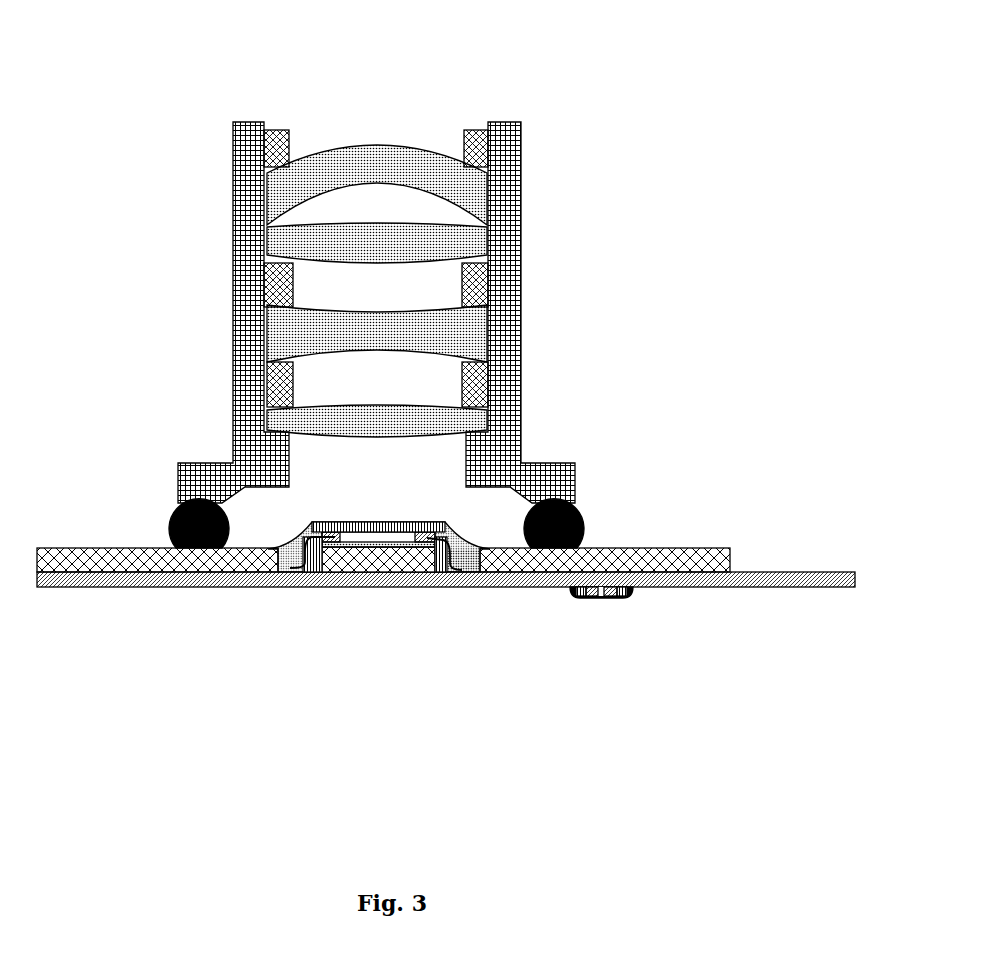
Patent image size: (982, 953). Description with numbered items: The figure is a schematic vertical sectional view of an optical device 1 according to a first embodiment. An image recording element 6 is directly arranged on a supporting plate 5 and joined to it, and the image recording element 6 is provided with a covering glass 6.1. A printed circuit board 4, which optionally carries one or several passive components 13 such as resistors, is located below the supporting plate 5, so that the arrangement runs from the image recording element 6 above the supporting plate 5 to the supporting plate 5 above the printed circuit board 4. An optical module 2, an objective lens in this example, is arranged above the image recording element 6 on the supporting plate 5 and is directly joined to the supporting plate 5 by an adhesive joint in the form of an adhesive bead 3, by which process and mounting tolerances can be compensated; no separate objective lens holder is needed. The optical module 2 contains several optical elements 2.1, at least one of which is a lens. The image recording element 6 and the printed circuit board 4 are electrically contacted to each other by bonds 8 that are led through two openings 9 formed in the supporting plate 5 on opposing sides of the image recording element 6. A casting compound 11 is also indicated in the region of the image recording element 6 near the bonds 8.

The optical device 1 is at (144, 105).
The optical module 2 is at (243, 177).
The optical element 2.1 is at (425, 428).
The adhesive bead 3 is at (197, 525).
The printed circuit board 4 is at (235, 582).
The supporting plate 5 is at (128, 562).
The image recording element 6 is at (368, 552).
The covering glass 6.1 is at (425, 533).
The bonds 8 is at (453, 562).
The opening 9 is at (322, 612).
The casting compound 11 is at (473, 562).
The passive component 13 is at (597, 592).